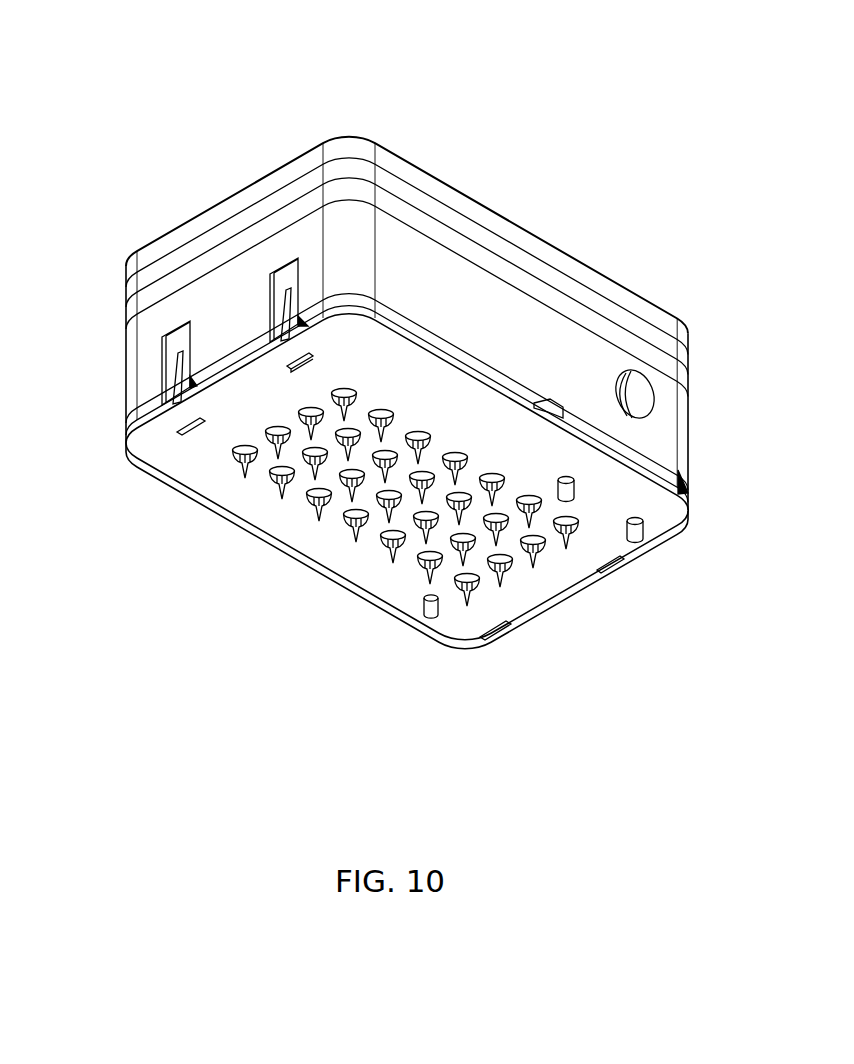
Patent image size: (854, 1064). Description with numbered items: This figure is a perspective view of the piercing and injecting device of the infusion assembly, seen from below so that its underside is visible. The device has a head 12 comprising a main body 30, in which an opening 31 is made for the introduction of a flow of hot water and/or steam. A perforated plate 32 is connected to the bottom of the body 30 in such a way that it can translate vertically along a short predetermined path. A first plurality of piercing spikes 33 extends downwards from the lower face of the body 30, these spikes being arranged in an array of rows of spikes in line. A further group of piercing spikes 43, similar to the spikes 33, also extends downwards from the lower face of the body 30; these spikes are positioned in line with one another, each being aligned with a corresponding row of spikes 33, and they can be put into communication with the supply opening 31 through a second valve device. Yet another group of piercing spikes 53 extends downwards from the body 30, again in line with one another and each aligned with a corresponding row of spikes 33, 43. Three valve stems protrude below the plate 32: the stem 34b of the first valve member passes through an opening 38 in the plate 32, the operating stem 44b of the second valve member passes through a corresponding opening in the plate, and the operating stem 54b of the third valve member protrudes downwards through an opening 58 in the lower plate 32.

The head 12 is at (232, 173).
The main body 30 is at (153, 331).
The opening 31 is at (650, 386).
The perforated plate 32 is at (282, 518).
The piercing spikes 33 is at (421, 432).
The stem 34b is at (598, 582).
The opening 38 is at (578, 487).
The piercing spikes 43 is at (410, 612).
The operating stem 44b is at (430, 618).
The piercing spikes 53 is at (567, 550).
The operating stem 54b is at (650, 540).
The opening 58 is at (645, 528).